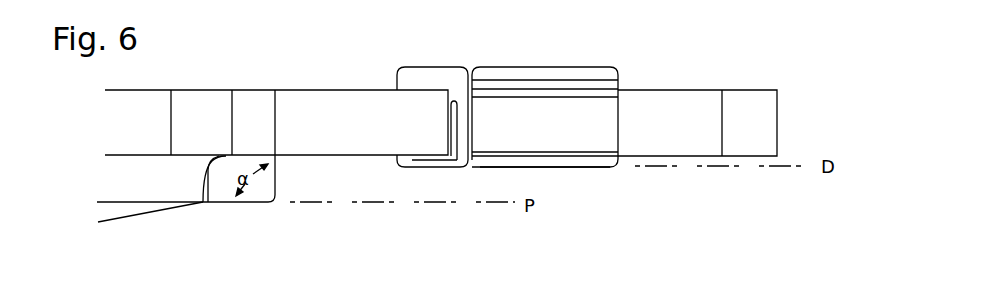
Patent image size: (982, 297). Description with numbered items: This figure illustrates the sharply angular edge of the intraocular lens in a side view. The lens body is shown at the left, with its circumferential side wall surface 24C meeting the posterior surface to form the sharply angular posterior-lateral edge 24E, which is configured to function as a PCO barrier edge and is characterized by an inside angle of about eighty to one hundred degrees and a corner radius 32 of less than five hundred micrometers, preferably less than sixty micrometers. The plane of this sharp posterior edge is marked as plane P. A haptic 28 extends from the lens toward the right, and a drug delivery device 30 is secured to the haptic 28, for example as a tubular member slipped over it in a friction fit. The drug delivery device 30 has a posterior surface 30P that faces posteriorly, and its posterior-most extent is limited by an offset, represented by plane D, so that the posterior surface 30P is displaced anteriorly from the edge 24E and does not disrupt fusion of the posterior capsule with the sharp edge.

The circumferential side wall surface 24C is at (160, 190).
The sharply angular posterior-lateral edge 24E is at (115, 204).
The corner radius 32 is at (273, 204).
The drug delivery device 30 is at (574, 67).
The posterior surface of the drug delivery device 30P is at (558, 172).
The haptic 28 is at (730, 89).